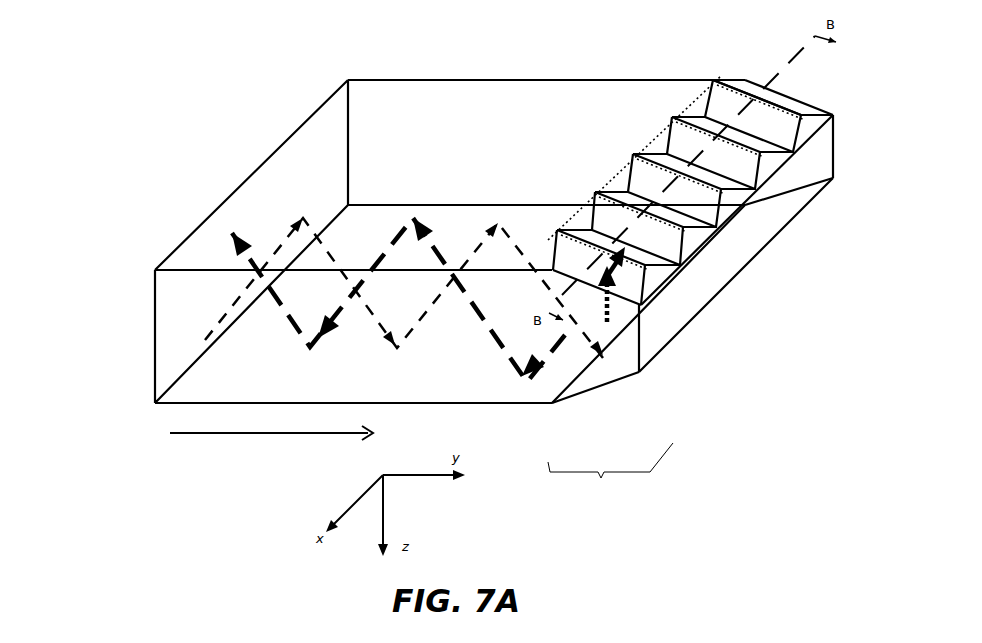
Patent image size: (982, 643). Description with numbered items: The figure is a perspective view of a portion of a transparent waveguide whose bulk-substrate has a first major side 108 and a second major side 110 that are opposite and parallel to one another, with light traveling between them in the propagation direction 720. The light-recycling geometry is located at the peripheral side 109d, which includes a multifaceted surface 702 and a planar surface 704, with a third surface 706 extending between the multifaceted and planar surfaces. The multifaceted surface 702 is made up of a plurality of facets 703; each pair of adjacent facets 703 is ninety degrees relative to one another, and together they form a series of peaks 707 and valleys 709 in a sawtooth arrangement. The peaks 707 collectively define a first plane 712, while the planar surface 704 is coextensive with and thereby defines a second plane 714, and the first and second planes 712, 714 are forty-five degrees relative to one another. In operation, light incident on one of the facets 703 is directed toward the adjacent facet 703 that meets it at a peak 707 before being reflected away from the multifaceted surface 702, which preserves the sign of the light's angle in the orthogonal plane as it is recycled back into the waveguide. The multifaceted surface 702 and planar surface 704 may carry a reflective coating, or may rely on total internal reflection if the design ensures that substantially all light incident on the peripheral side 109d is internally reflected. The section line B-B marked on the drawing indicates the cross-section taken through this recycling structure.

The first major side 108 is at (487, 108).
The second major side 110 is at (488, 376).
The multifaceted surface 702 is at (758, 73).
The facets 703 is at (748, 79).
The planar surface 704 is at (624, 380).
The second plane 714 is at (789, 191).
The slanted end facet 706 is at (715, 275).
The peaks 707 is at (702, 114).
The valleys 709 is at (690, 268).
The first plane 712 is at (706, 78).
The propagation direction 720 is at (267, 438).
The peripheral side 109d is at (610, 474).